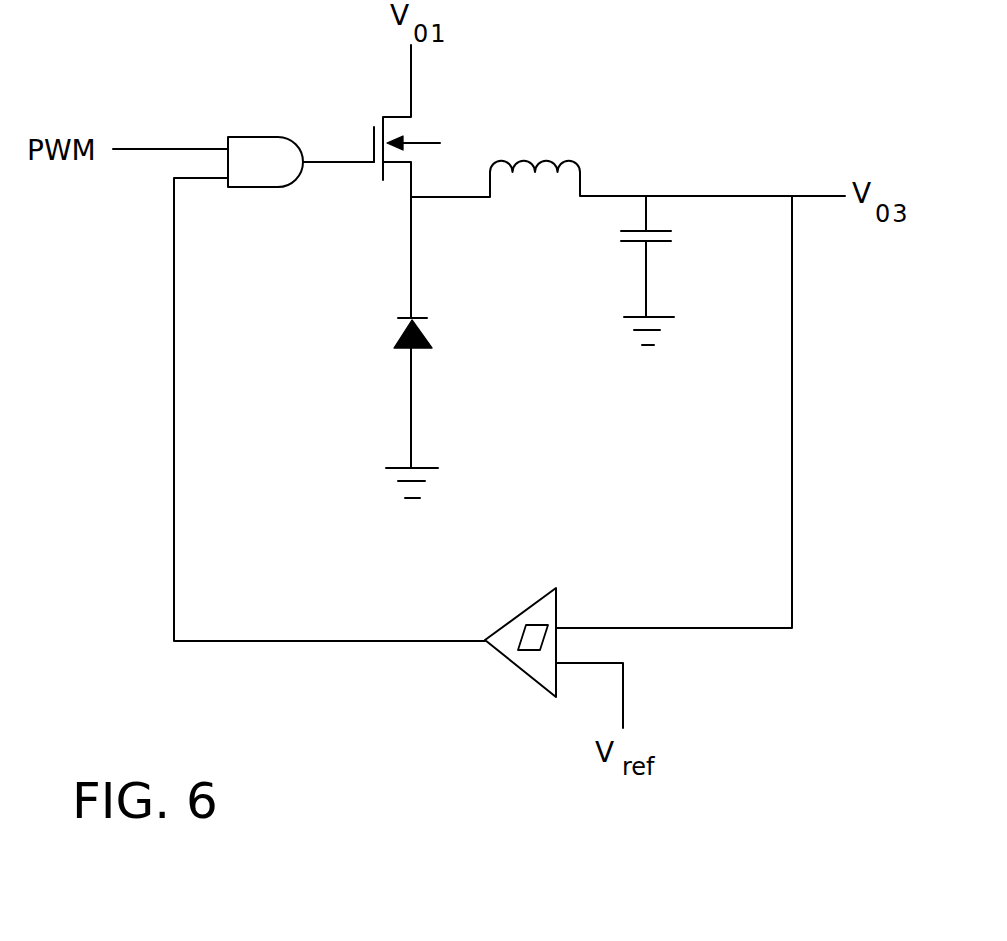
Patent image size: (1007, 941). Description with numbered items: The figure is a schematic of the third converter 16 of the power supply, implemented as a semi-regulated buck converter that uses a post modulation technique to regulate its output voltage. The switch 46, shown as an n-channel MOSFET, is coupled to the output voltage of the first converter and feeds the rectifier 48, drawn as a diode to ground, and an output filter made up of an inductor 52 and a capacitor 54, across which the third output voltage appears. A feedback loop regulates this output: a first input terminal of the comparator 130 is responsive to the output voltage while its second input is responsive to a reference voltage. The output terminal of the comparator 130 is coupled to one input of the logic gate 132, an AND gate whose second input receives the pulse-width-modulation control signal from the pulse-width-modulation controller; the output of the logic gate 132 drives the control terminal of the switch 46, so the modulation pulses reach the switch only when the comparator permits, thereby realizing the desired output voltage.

The third converter 16 is at (756, 138).
The switch 46 is at (412, 128).
The rectifier 48 is at (425, 338).
The inductor 52 is at (565, 172).
The capacitor 54 is at (670, 237).
The comparator 130 is at (510, 663).
The logic gate 132 is at (246, 187).